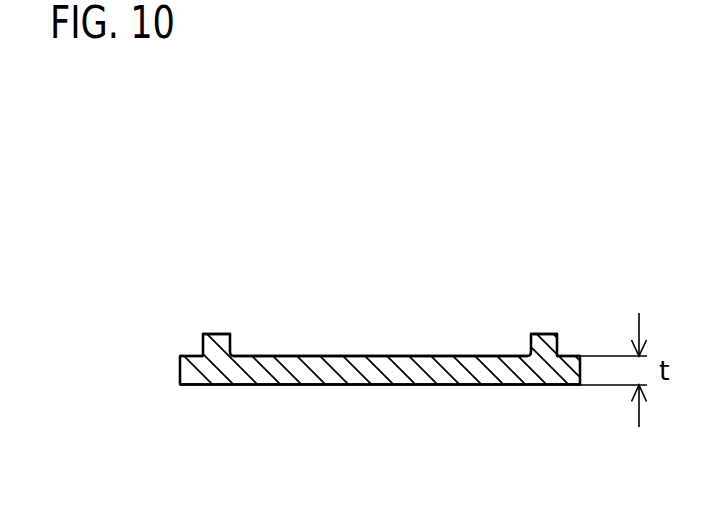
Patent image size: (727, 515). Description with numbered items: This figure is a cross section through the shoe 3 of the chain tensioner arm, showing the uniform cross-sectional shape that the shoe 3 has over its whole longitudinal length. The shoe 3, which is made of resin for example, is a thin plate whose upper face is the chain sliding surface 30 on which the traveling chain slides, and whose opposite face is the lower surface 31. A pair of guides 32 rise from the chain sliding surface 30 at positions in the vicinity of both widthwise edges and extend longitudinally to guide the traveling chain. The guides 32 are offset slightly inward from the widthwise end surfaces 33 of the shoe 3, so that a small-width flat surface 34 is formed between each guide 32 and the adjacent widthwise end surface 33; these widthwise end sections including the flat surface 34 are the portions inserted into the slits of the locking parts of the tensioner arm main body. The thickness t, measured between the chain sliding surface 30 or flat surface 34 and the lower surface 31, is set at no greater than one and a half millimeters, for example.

The shoe 3 is at (326, 266).
The chain sliding surface 30 is at (399, 356).
The lower surface 31 is at (401, 385).
The guides 32 is at (216, 334).
The widthwise end surfaces 33 is at (180, 375).
The flat surface 34 is at (192, 355).